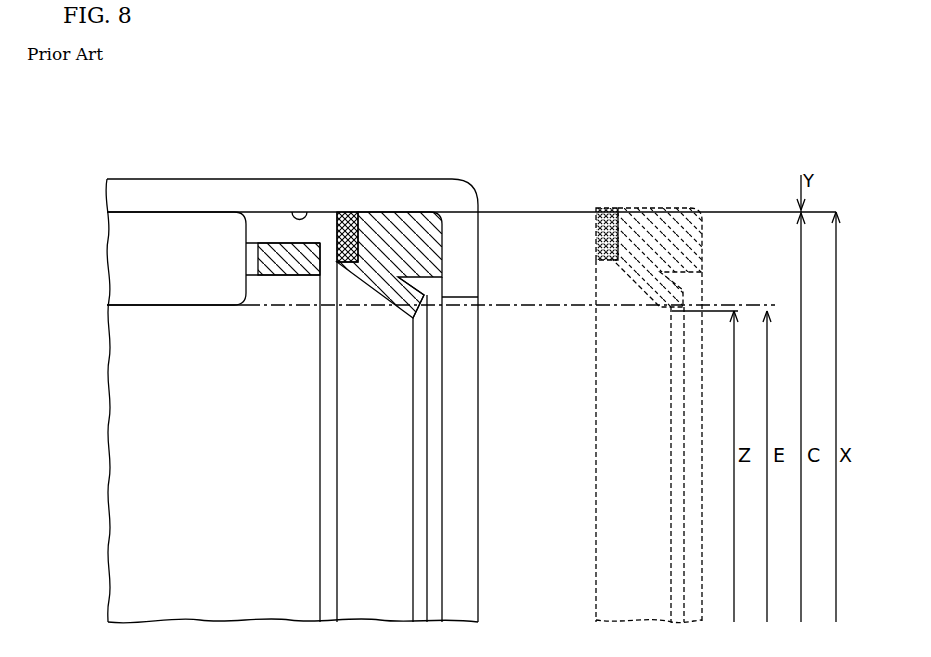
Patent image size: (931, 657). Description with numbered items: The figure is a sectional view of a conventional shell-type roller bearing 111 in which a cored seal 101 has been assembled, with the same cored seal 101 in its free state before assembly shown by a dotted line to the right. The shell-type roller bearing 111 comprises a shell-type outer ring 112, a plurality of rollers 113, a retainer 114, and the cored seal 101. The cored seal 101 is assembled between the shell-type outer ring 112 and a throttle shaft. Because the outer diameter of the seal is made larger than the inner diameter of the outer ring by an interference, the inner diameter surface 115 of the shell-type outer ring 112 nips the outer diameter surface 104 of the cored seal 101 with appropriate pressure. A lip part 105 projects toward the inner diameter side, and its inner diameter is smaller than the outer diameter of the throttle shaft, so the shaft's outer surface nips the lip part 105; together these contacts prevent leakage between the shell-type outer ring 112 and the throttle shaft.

The shell-type roller bearing 111 is at (463, 100).
The shell-type outer ring 112 is at (221, 190).
The rollers 113 is at (190, 240).
The retainer 114 is at (280, 253).
The inner diameter surface 115 is at (303, 211).
The cored seal 101 is at (380, 223).
The outer diameter surface 104 is at (397, 211).
The lip part 105 is at (423, 292).